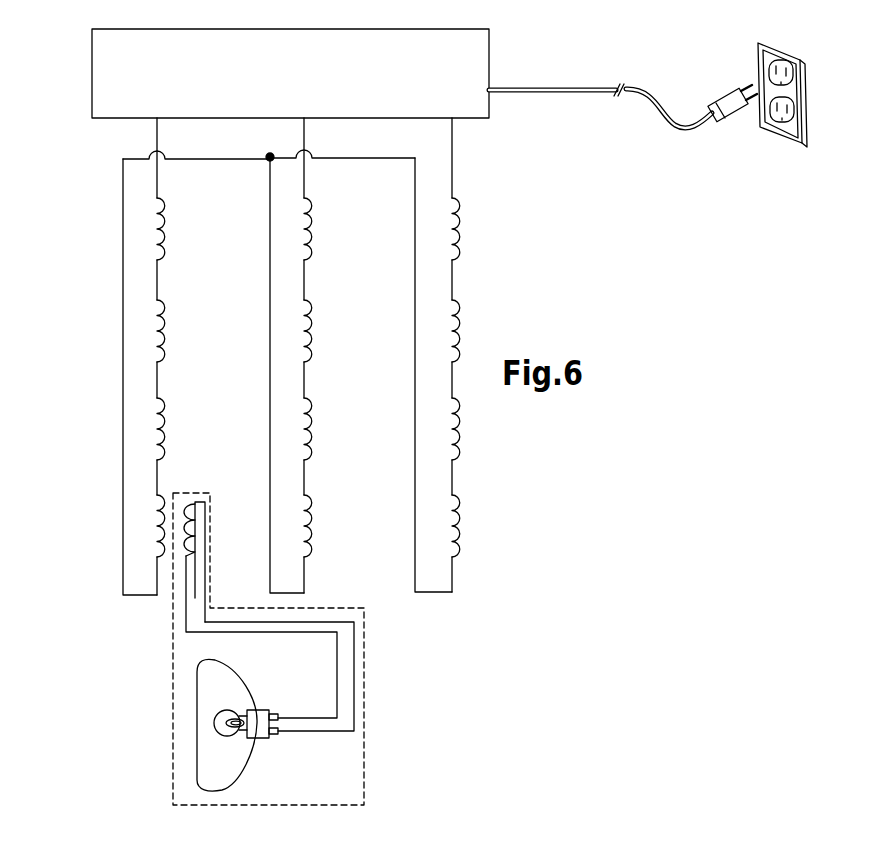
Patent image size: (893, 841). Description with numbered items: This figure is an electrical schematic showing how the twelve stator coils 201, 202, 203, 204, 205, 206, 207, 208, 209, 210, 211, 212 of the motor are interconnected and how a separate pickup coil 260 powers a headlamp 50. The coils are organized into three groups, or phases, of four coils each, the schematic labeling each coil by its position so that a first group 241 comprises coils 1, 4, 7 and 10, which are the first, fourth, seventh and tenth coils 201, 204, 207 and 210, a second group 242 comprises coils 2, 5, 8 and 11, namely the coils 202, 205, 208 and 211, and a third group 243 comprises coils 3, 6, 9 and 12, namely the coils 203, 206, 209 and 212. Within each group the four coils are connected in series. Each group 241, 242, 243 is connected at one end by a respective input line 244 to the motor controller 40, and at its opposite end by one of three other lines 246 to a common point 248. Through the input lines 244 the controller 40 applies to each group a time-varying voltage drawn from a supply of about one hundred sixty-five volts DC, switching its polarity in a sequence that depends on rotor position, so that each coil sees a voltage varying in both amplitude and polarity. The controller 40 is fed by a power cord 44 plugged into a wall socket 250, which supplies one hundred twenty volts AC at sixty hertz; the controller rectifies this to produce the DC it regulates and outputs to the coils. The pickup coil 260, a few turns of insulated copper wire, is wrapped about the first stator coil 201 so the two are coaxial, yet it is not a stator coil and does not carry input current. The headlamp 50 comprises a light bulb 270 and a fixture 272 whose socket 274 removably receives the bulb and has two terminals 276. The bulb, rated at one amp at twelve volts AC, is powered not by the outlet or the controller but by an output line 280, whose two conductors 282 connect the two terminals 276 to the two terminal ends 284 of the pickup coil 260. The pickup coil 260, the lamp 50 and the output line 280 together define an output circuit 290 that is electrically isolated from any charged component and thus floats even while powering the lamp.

The motor controller 40 is at (393, 29).
The power cord 44 is at (552, 88).
The wall socket 250 is at (758, 65).
The input line 244 is at (157, 130).
The common point 248 is at (270, 157).
The lines 246 is at (123, 594).
The first group 241 is at (178, 200).
The second group 242 is at (316, 190).
The third group 243 is at (466, 188).
The pole 1 is at (183, 498).
The pole 2 is at (329, 526).
The pole 3 is at (473, 526).
The pole 4 is at (182, 429).
The pole 5 is at (328, 429).
The pole 6 is at (481, 429).
The pole 7 is at (181, 331).
The pole 8 is at (328, 326).
The pole 9 is at (473, 331).
The pole 10 is at (179, 229).
The pole 11 is at (328, 229).
The pole 12 is at (466, 229).
The first coil 201 is at (162, 492).
The second coil 202 is at (312, 530).
The third coil 203 is at (460, 515).
The fourth coil 204 is at (165, 418).
The fifth coil 205 is at (312, 418).
The sixth coil 206 is at (460, 418).
The seventh coil 207 is at (165, 323).
The eighth coil 208 is at (312, 305).
The ninth coil 209 is at (460, 305).
The tenth coil 210 is at (165, 237).
The eleventh coil 211 is at (312, 240).
The twelfth coil 212 is at (497, 240).
The output line 280 is at (176, 614).
The pickup coil 260 is at (221, 546).
The terminal ends 284 is at (206, 540).
The conductors 282 is at (198, 606).
The output circuit 290 is at (158, 715).
The headlamp 50 is at (185, 688).
The fixture 272 is at (225, 790).
The light bulb 270 is at (203, 752).
The socket 274 is at (257, 740).
The terminals 276 is at (273, 708).